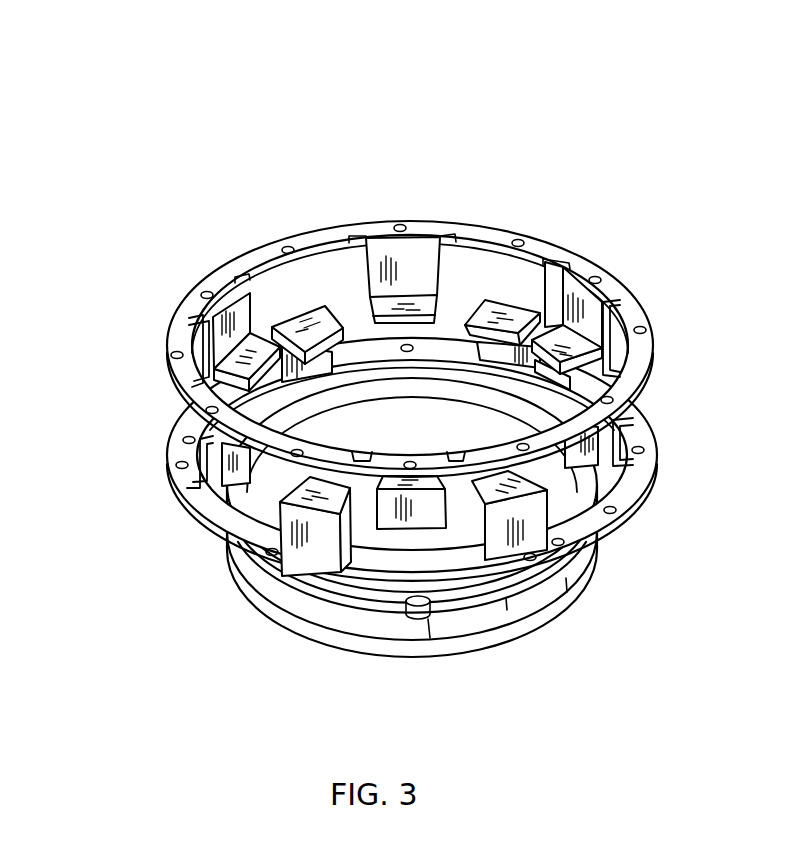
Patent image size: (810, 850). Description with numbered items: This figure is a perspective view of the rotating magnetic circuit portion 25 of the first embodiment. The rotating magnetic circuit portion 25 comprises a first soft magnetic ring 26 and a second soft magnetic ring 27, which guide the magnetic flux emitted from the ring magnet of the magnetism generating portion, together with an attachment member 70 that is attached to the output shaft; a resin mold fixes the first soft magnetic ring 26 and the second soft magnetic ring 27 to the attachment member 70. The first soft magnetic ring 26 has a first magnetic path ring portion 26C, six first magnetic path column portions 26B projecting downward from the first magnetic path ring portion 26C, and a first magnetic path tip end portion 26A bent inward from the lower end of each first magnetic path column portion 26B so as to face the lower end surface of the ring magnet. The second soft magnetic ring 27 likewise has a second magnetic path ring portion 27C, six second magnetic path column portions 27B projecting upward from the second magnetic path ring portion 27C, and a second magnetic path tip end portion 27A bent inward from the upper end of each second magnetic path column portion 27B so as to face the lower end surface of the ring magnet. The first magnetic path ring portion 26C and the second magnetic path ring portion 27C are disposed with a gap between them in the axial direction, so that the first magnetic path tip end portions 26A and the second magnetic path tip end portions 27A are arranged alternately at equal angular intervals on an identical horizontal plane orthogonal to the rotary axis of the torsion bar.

The rotating magnetic circuit portion 25 is at (375, 366).
The first soft magnetic ring 26 is at (447, 289).
The first magnetic path tip end portion 26A is at (537, 336).
The first magnetic path column portion 26B is at (578, 293).
The first magnetic path ring portion 26C is at (619, 287).
The second soft magnetic ring 27 is at (339, 372).
The second magnetic path tip end portion 27A is at (513, 318).
The second magnetic path column portion 27B is at (493, 346).
The second magnetic path ring portion 27C is at (167, 480).
The attachment member 70 is at (280, 627).